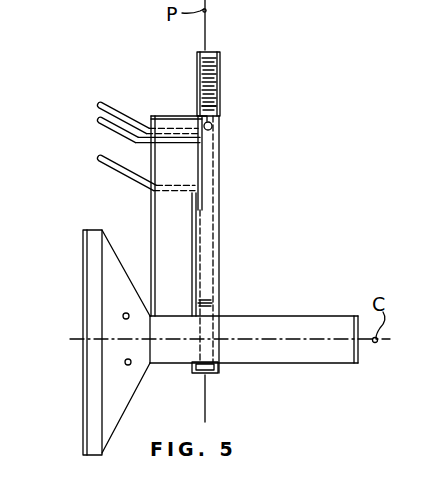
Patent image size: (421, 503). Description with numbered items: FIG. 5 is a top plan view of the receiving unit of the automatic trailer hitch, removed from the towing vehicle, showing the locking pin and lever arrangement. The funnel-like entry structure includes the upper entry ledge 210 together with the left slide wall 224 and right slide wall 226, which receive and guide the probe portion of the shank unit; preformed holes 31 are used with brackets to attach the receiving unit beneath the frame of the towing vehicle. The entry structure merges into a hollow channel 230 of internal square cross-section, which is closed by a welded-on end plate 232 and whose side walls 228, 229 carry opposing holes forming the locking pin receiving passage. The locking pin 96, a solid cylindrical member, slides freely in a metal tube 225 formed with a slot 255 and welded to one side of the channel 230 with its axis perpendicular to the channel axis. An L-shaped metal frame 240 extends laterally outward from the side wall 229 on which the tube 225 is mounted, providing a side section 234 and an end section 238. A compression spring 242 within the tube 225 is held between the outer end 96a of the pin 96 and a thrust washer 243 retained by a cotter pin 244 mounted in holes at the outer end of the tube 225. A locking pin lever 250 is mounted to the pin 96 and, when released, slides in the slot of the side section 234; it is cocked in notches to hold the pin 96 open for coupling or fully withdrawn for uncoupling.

The cotter pin 244 is at (204, 53).
The compression spring 242 is at (212, 83).
The outer end of pin 96a is at (203, 110).
The locking pin 96 is at (208, 232).
The metal tube 225 is at (220, 180).
The L-shaped metal frame 240 is at (164, 116).
The slot 255 is at (197, 158).
The end section 238 is at (180, 116).
The side section 234 is at (155, 270).
The locking pin lever 250 is at (132, 138).
The left slide wall 224 is at (120, 260).
The right slide wall 226 is at (120, 420).
The upper entry ledge 210 is at (92, 437).
The preformed holes 31 is at (130, 365).
The side wall 228 is at (317, 364).
The side wall 229 is at (317, 316).
The end plate 232 is at (358, 353).
The hollow channel 230 is at (277, 365).
The thrust washer 243 is at (405, 494).